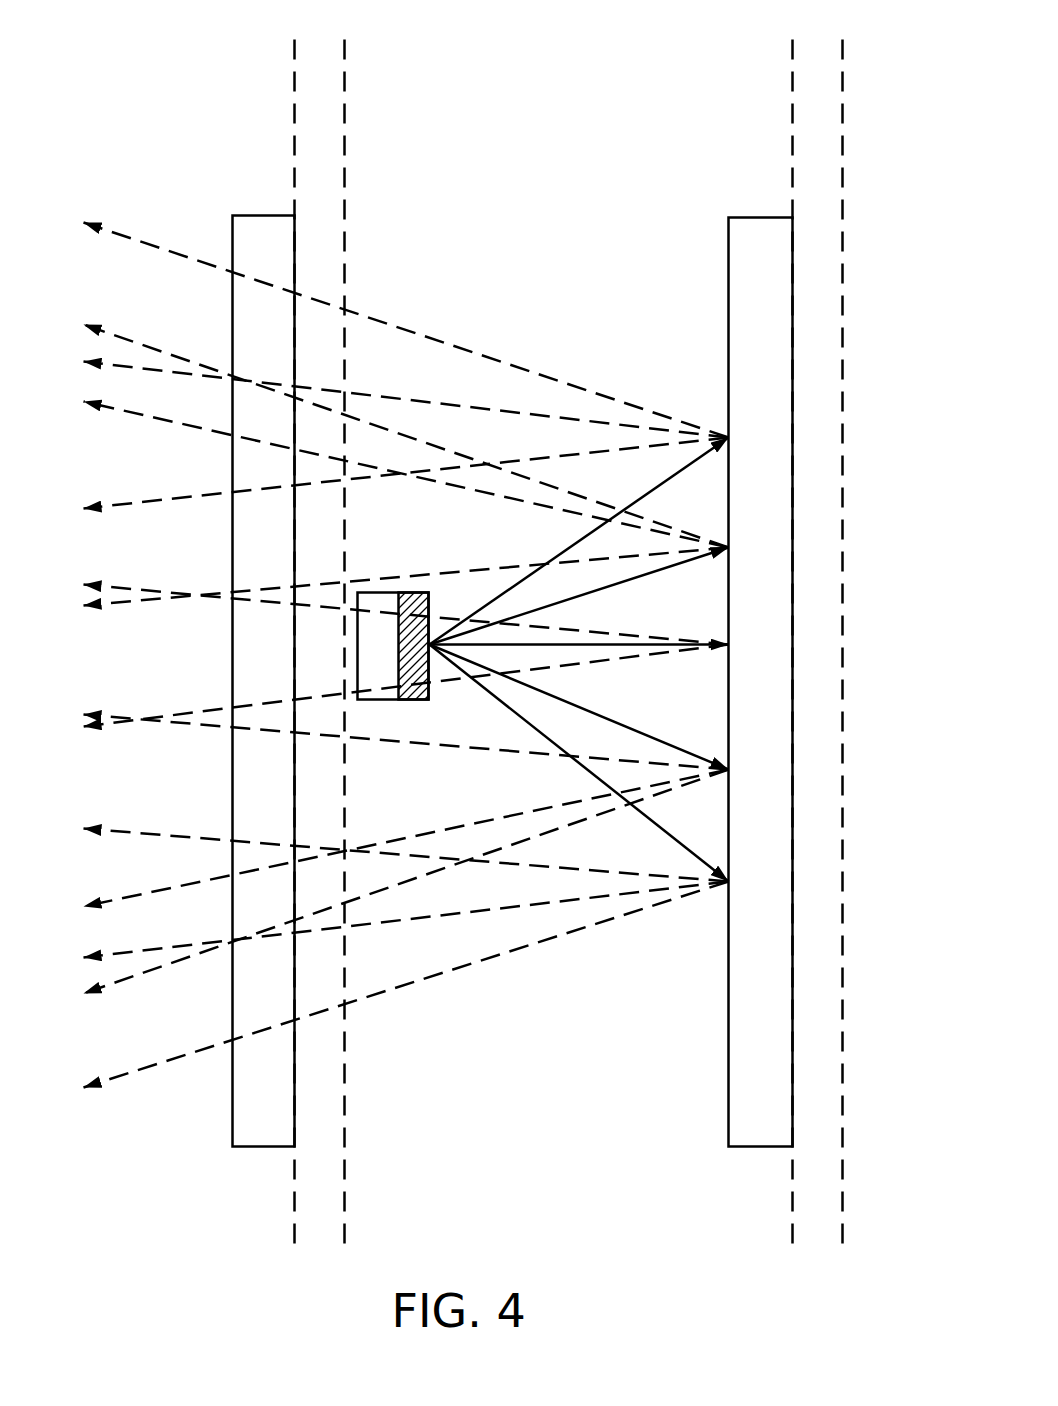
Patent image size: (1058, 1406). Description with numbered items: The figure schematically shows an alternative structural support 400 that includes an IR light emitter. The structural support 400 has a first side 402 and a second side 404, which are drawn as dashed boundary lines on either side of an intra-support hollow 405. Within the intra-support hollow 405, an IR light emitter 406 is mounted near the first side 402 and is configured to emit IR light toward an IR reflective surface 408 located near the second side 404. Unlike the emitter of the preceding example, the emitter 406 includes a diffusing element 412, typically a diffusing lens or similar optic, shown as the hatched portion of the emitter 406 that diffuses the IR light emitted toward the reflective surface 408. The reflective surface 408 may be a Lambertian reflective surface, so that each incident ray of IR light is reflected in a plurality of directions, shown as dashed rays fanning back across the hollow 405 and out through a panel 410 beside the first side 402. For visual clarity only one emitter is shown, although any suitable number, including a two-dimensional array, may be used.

The structural support 400 is at (265, 86).
The first side 402 is at (345, 240).
The second side 404 is at (843, 268).
The intra-support hollow 405 is at (558, 269).
The IR light emitter 406 is at (373, 700).
The IR reflective surface 408 is at (729, 318).
The light transmissive panel 410 is at (233, 240).
The diffusing element 412 is at (418, 593).